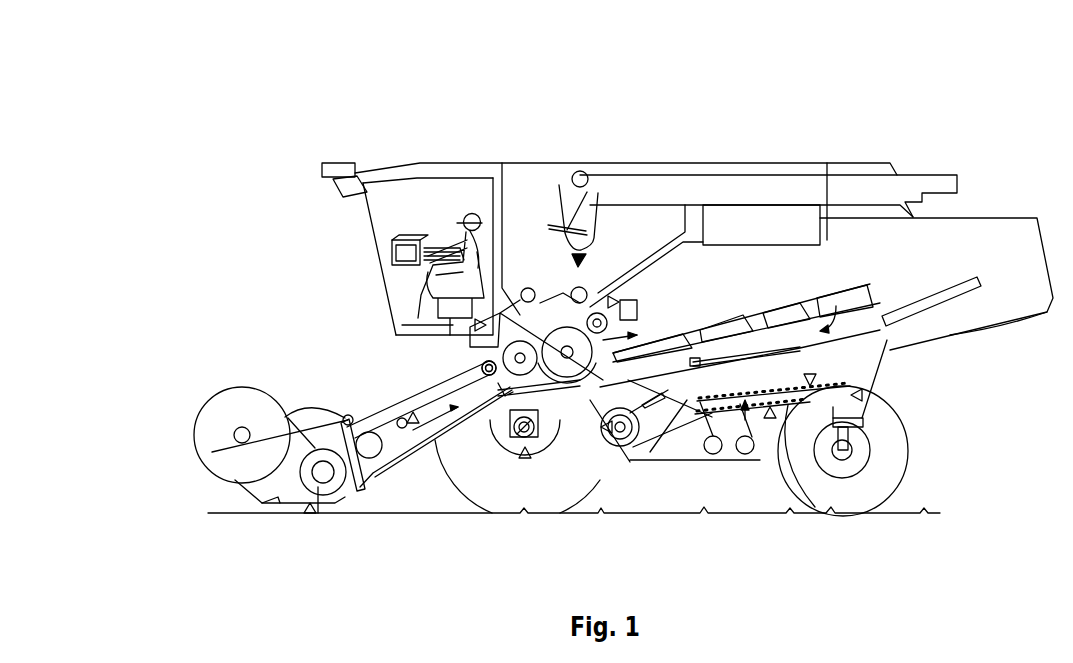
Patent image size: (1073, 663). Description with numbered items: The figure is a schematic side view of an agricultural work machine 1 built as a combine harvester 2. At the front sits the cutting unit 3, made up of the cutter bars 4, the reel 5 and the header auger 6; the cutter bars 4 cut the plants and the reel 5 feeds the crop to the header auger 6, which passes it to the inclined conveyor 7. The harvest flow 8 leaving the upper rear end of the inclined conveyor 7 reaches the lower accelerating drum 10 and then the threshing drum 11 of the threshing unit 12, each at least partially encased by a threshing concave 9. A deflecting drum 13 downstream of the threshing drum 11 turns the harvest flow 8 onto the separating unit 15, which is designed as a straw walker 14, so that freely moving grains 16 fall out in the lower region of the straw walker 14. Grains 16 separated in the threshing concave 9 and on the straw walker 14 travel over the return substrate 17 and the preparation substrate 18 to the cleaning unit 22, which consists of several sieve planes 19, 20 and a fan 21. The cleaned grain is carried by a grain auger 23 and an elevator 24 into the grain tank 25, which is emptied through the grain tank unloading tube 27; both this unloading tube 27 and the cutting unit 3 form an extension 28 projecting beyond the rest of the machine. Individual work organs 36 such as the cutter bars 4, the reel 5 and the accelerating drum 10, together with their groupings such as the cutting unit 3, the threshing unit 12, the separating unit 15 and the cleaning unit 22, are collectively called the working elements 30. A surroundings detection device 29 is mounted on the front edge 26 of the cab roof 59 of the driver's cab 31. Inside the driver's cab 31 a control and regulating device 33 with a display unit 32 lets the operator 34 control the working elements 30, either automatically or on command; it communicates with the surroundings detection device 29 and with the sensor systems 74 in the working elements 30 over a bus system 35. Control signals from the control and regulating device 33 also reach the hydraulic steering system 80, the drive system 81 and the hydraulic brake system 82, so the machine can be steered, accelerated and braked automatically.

The agricultural work machine 1 is at (270, 188).
The combine harvester 2 is at (594, 314).
The cutting unit 3 is at (290, 395).
The cutter bars 4 is at (292, 497).
The reel 5 is at (218, 408).
The header auger 6 is at (328, 482).
The inclined conveyor 7 is at (395, 410).
The harvest flow 8 is at (363, 490).
The threshing concave 9 is at (572, 385).
The lower accelerating drum 10 is at (535, 250).
The threshing drum 11 is at (560, 307).
The threshing unit 12 is at (497, 425).
The deflecting drum 13 is at (697, 417).
The straw walker 14 is at (937, 290).
The separating unit 15 is at (788, 322).
The grains 16 is at (893, 322).
The return substrate 17 is at (867, 340).
The preparation substrate 18 is at (693, 417).
The sieve plane 19 is at (832, 407).
The sieve plane 20 is at (795, 403).
The fan 21 is at (632, 447).
The cleaning unit 22 is at (715, 465).
The grain auger 23 is at (708, 433).
The elevator 24 is at (660, 320).
The grain tank 25 is at (515, 190).
The edge of the roof of the cab 26 is at (343, 163).
The grain tank unloading tube 27 is at (757, 190).
The extension 28 is at (594, 314).
The surroundings detection device 29 is at (323, 163).
The working elements 30 is at (594, 314).
The driver's cab 31 is at (440, 188).
The display unit 32 is at (372, 167).
The control and regulating device 33 is at (435, 232).
The operator 34 is at (465, 203).
The bus system 35 is at (392, 254).
The work organs 36 is at (594, 314).
The cab roof 59 is at (455, 180).
The sensor systems 74 is at (595, 205).
The hydraulic steering system 80 is at (842, 450).
The drive system 81 is at (722, 222).
The hydraulic brake system 82 is at (545, 375).